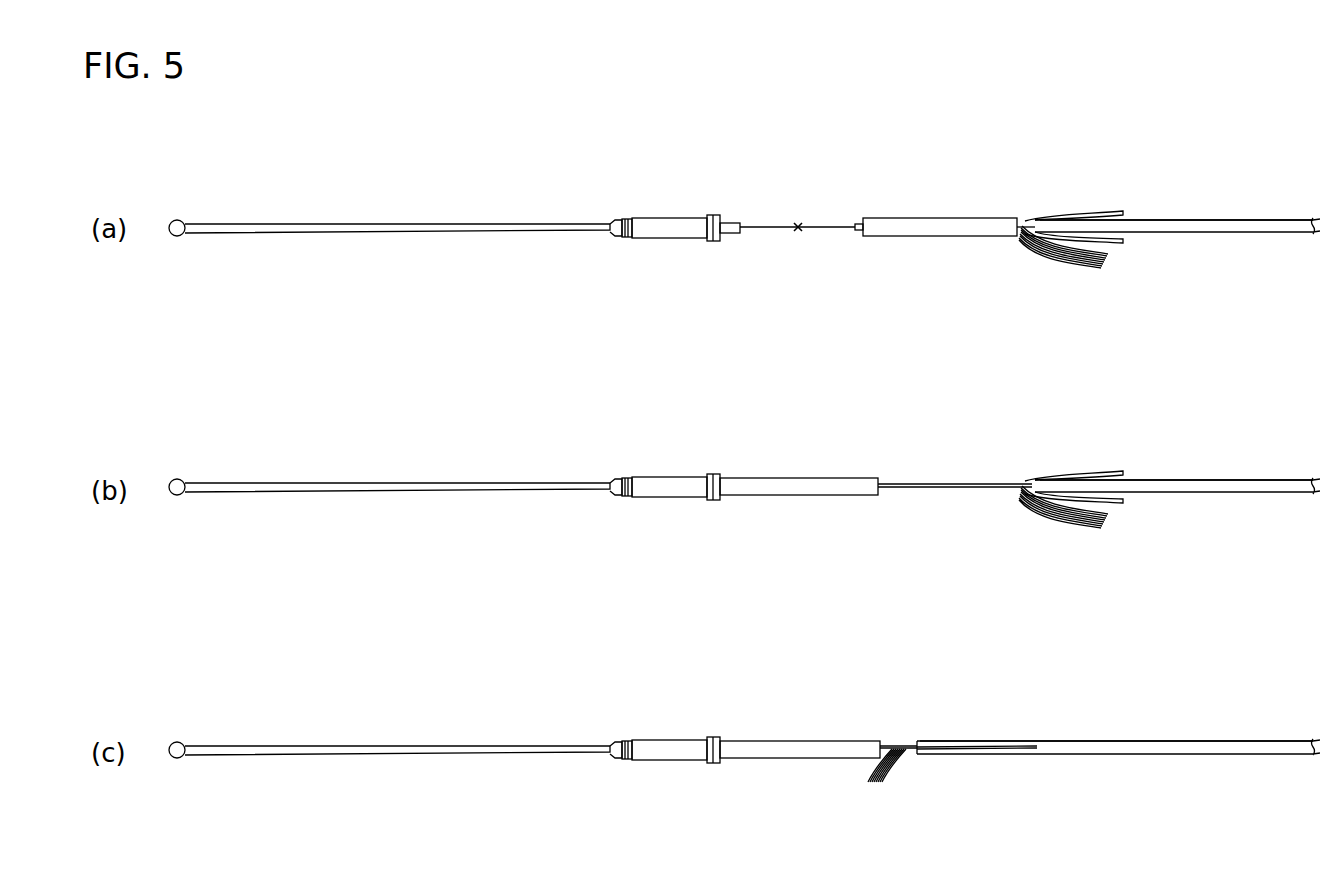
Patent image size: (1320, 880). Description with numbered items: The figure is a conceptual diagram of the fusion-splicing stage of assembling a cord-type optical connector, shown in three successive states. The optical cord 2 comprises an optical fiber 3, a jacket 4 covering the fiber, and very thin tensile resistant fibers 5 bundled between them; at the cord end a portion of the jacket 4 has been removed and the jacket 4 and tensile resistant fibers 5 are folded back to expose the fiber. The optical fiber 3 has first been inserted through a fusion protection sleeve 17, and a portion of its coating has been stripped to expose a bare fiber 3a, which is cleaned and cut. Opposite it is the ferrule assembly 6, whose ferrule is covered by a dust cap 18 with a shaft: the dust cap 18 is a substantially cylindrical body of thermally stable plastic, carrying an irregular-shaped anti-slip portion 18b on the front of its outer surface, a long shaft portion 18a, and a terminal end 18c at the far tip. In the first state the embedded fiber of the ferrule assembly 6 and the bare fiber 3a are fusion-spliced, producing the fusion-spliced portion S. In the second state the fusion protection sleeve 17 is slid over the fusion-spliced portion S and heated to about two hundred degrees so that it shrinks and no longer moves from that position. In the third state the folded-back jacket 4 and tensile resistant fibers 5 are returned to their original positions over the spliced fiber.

The optical cord 2 is at (1257, 216).
The optical fiber 3 is at (855, 224).
The bare fiber 3a is at (826, 229).
The jacket 4 is at (1165, 226).
The tensile resistant fibers 5 is at (1083, 263).
The ferrule assembly 6 is at (735, 222).
The fusion protection sleeve 17 is at (960, 225).
The dust cap 18 is at (645, 222).
The shaft portion 18a is at (458, 224).
The irregular-shaped portion 18b is at (628, 241).
The terminal end 18c is at (178, 237).
The fusion-spliced portion S is at (798, 223).